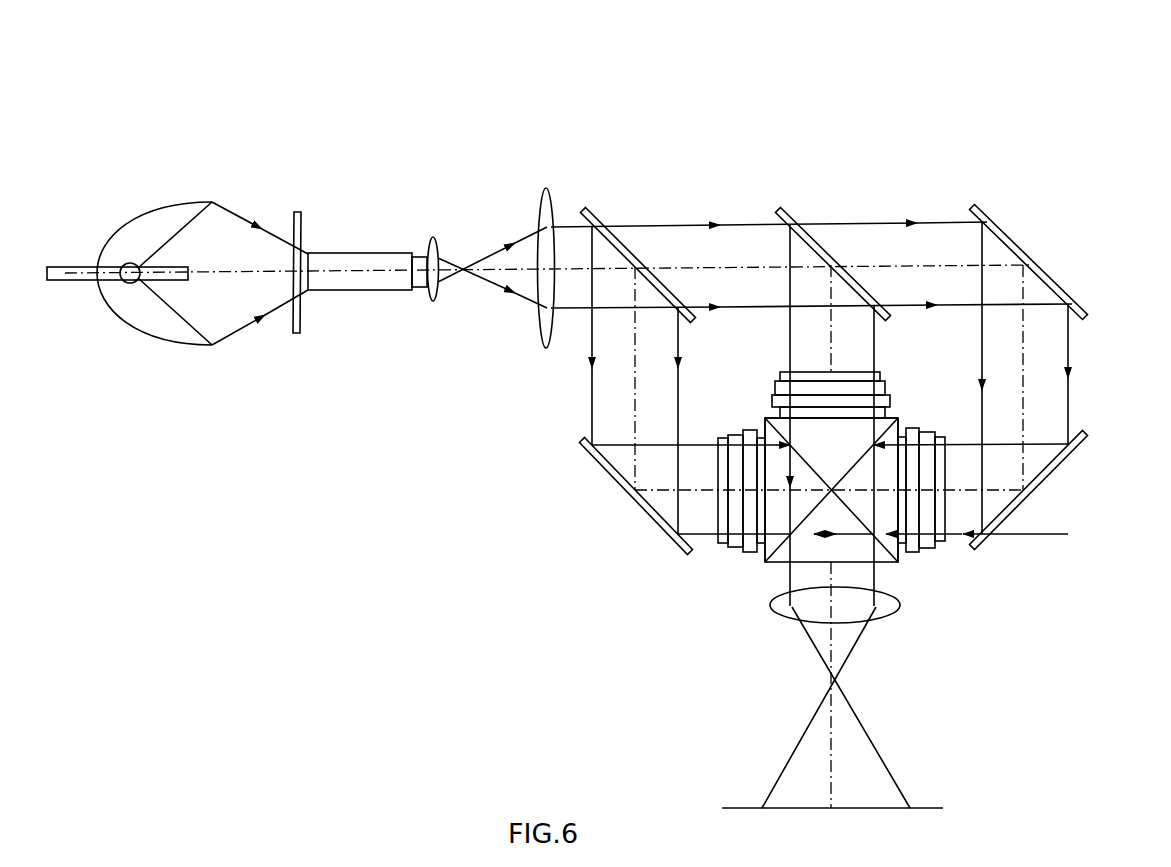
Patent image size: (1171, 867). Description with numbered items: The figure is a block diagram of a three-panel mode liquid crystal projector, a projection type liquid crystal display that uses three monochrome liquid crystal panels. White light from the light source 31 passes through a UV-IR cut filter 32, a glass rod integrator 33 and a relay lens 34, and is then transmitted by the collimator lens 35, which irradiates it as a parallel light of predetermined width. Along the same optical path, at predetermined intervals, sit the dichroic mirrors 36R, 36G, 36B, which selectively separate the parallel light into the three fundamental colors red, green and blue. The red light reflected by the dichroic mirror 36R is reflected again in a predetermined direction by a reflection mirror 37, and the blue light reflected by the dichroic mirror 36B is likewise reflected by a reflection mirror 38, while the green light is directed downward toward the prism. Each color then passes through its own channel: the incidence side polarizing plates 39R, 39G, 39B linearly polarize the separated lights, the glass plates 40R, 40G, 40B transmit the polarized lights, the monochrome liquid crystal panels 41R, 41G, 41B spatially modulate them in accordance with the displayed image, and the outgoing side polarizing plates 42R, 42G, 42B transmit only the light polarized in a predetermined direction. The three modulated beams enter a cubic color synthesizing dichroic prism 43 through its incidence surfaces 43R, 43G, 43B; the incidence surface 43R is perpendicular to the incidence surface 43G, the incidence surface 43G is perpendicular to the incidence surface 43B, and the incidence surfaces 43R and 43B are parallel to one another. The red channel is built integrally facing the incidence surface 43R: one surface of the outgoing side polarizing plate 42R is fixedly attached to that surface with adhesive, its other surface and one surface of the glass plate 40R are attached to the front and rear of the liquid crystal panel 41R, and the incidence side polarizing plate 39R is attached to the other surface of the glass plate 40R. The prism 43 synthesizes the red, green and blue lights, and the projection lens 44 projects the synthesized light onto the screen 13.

The screen 13 is at (733, 805).
The light source 31 is at (165, 210).
The UV-IR cut filter 32 is at (297, 208).
The glass rod integrator 33 is at (360, 252).
The relay lens 34 is at (432, 237).
The collimator lens 35 is at (541, 342).
The dichroic mirror 36R is at (638, 250).
The dichroic mirror 36G is at (832, 248).
The dichroic mirror 36B is at (1045, 270).
The reflection mirror 37 is at (615, 485).
The reflection mirror 38 is at (1020, 508).
The incidence side polarizing plate 39R is at (721, 540).
The glass plate 40R is at (734, 546).
The monochrome liquid crystal panel 41R is at (753, 548).
The outgoing side polarizing plate 42R is at (763, 541).
The incidence side polarizing plate 39G is at (781, 375).
The glass plate 40G is at (776, 391).
The monochrome liquid crystal panel 41G is at (773, 404).
The outgoing side polarizing plate 42G is at (781, 413).
The incidence side polarizing plate 39B is at (941, 540).
The glass plate 40B is at (930, 546).
The monochrome liquid crystal panel 41B is at (921, 549).
The outgoing side polarizing plate 42B is at (904, 542).
The color synthesizing dichroic prism 43 is at (917, 402).
The incidence surface 43R is at (763, 418).
The incidence surface 43G is at (896, 418).
The incidence surface 43B is at (898, 419).
The projection lens 44 is at (782, 618).